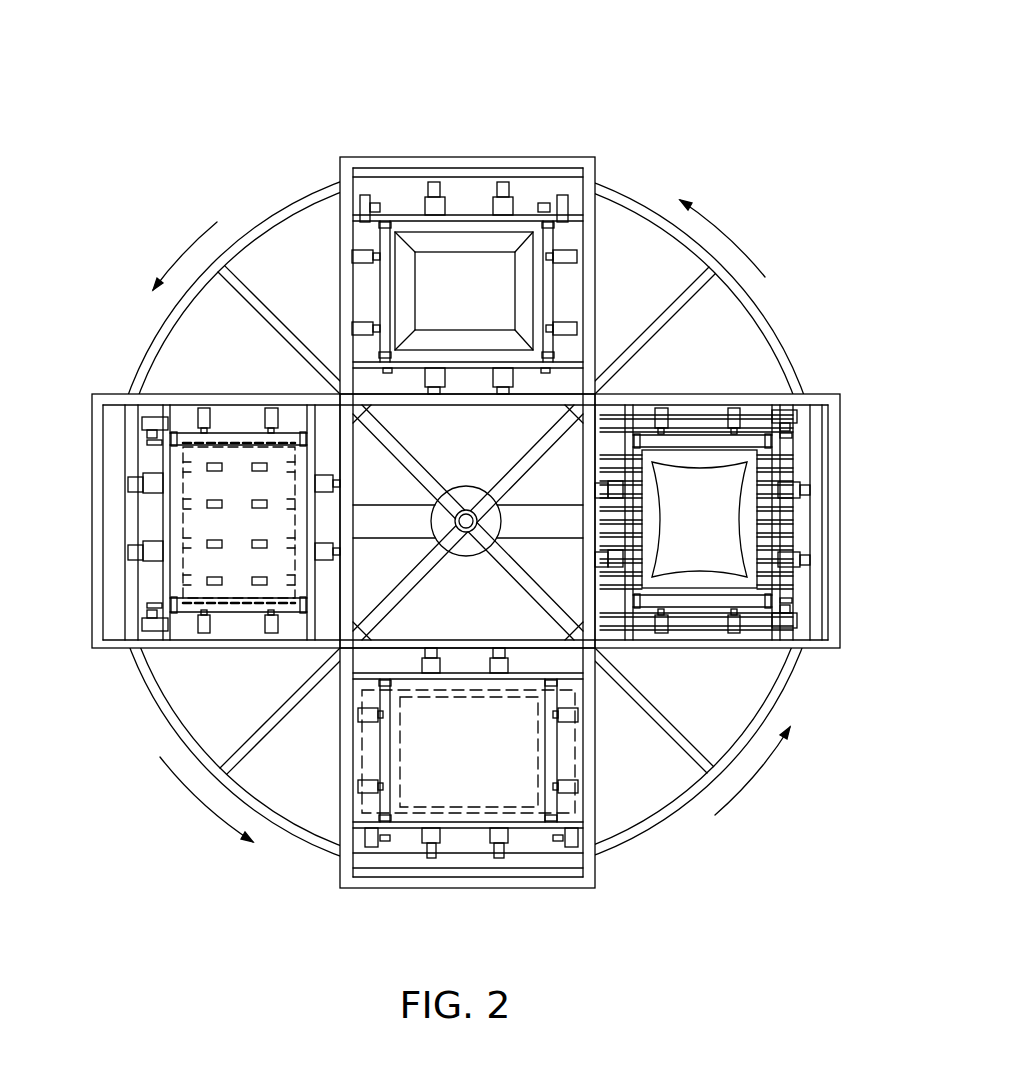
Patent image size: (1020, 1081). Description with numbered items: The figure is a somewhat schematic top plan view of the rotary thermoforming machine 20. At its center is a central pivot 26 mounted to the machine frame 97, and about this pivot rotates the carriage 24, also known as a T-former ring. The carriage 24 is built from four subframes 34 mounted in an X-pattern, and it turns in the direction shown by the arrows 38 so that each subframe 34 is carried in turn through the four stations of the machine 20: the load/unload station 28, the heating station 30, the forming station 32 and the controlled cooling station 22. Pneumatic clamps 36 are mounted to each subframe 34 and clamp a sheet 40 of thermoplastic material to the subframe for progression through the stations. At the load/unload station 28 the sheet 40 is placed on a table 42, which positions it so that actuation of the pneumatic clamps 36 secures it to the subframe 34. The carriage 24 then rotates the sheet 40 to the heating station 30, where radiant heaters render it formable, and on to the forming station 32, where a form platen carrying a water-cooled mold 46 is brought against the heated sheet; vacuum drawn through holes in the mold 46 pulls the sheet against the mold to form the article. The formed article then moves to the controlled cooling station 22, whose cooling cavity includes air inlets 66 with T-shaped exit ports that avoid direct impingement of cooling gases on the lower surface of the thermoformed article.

The thermoforming machine 20 is at (570, 118).
The controlled cooling station 22 is at (92, 440).
The carriage 24 is at (266, 219).
The central pivot 26 is at (472, 508).
The load/unload station 28 is at (565, 890).
The heating station 30 is at (838, 612).
The forming station 32 is at (398, 156).
The subframe 34 is at (378, 300).
The pneumatic clamps 36 is at (500, 188).
The arrows 38 is at (188, 250).
The sheet 40 is at (768, 528).
The table 42 is at (540, 741).
The water-cooled mold 46 is at (462, 332).
The air inlets 66 is at (214, 500).
The machine frame 97 is at (412, 542).